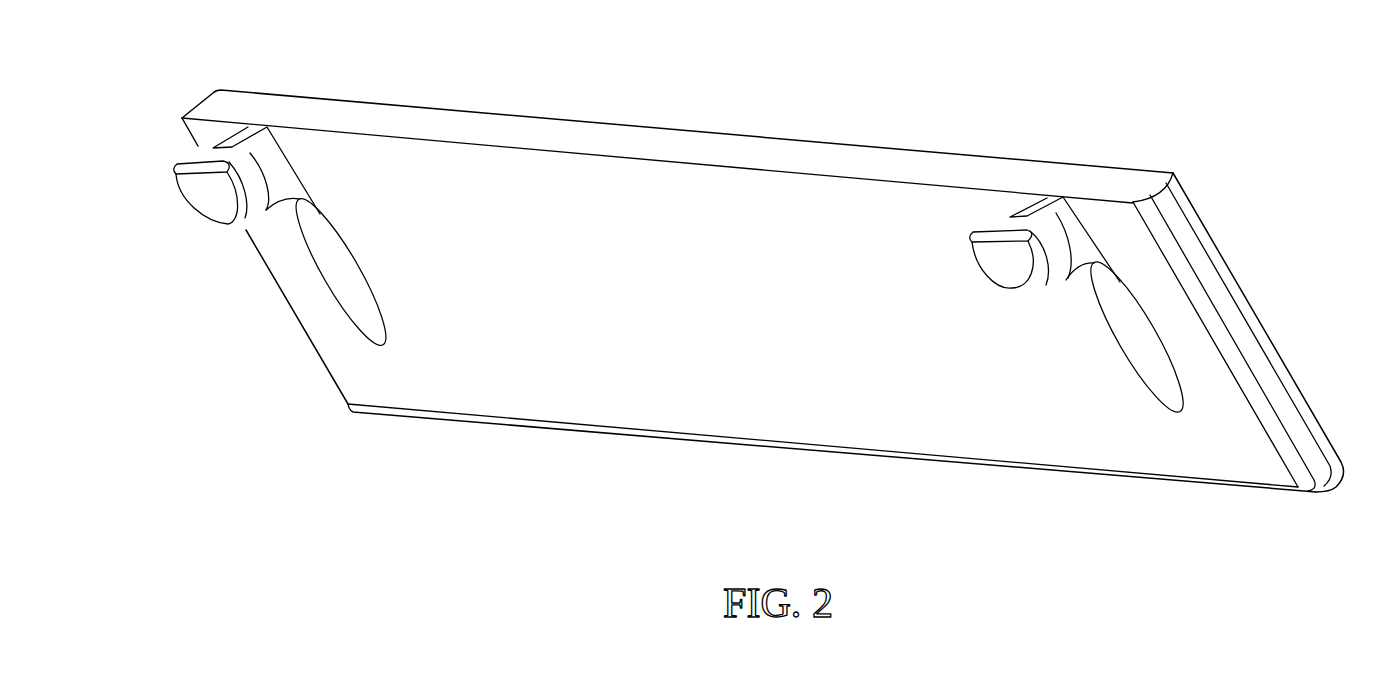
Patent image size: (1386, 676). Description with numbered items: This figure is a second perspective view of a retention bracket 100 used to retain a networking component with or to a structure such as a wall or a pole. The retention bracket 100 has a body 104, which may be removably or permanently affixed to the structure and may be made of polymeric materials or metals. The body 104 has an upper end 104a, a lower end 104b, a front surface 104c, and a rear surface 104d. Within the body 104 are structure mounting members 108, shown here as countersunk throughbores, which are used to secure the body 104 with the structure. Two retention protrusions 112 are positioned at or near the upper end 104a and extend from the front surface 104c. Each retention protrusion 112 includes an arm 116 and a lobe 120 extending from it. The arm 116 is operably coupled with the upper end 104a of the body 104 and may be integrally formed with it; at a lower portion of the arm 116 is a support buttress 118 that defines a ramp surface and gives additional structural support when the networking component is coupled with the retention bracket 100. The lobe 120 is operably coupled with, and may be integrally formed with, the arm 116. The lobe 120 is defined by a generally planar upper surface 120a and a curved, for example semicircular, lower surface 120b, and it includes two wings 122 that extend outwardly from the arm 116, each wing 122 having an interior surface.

The retention bracket 100 is at (1237, 295).
The body 104 is at (1193, 247).
The upper end 104a is at (1141, 173).
The lower end 104b is at (1336, 494).
The front surface 104c is at (724, 367).
The rear surface 104d is at (878, 136).
The structure mounting member 108 is at (386, 297).
The retention protrusion 112 is at (172, 138).
The arm 116 is at (205, 126).
The support buttress 118 is at (288, 200).
The lobe 120 is at (215, 236).
The upper surface 120a is at (186, 156).
The lower surface 120b is at (249, 228).
The wing 122 is at (198, 193).